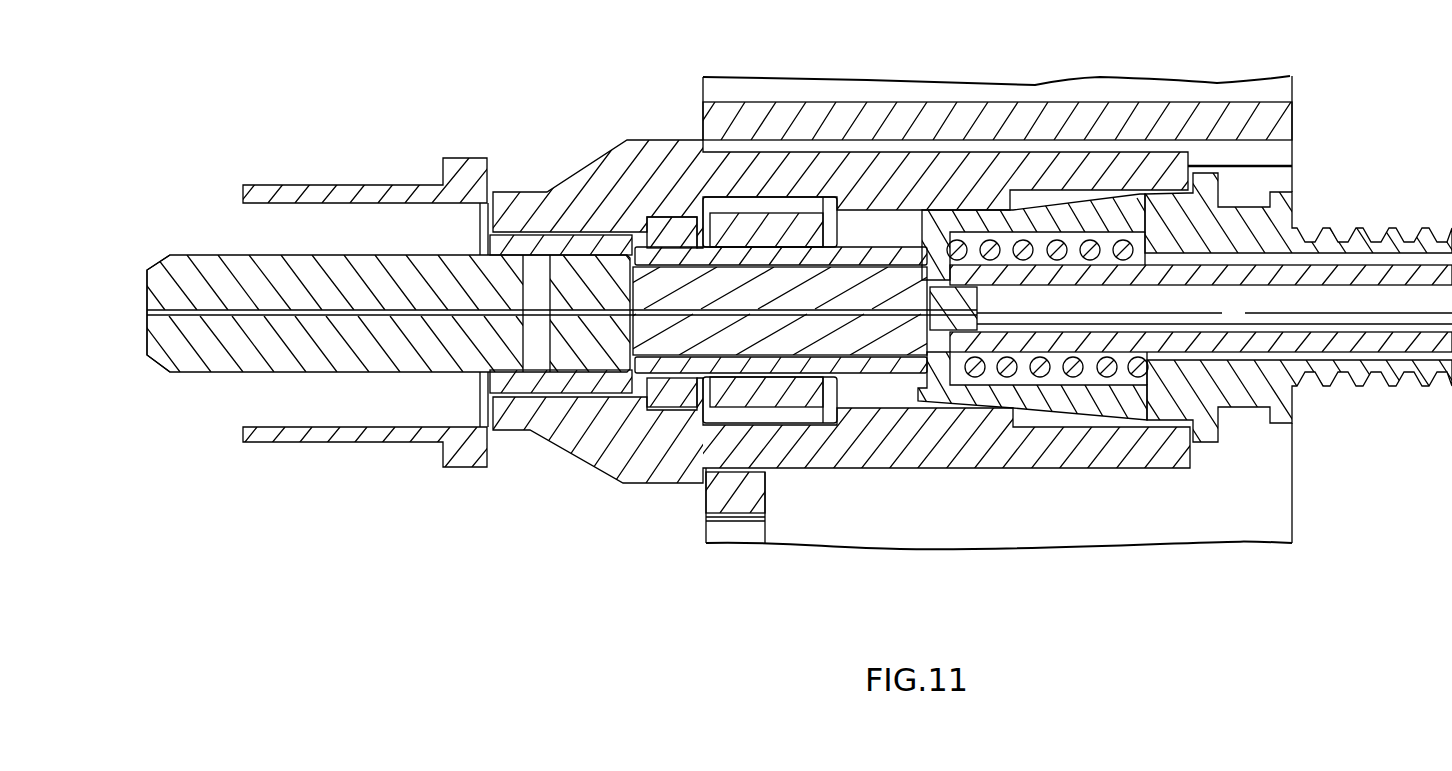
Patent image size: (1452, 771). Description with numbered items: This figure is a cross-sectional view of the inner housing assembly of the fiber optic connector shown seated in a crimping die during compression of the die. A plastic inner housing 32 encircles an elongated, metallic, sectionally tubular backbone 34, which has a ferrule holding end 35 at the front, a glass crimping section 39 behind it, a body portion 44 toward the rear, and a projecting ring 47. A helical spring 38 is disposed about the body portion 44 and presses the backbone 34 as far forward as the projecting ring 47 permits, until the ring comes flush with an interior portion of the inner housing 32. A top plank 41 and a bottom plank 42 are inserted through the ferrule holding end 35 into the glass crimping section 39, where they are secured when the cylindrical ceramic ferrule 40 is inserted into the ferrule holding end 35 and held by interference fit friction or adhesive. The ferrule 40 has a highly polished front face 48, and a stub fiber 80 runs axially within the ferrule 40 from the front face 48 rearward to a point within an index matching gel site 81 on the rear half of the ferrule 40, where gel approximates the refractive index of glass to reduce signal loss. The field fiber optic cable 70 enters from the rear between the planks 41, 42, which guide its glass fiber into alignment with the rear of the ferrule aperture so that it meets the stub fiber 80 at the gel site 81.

The inner housing 32 is at (549, 192).
The backbone 34 is at (848, 423).
The ferrule holding end 35 is at (500, 432).
The helical spring 38 is at (970, 378).
The glass crimping section 39 is at (878, 408).
The ceramic ferrule 40 is at (207, 373).
The top plank 41 is at (630, 266).
The bottom plank 42 is at (660, 373).
The body portion 44 is at (1058, 400).
The projecting ring 47 is at (692, 408).
The front face 48 is at (147, 337).
The fiber optic cable 70 is at (572, 318).
The stub fiber 80 is at (331, 313).
The index matching gel site 81 is at (538, 267).